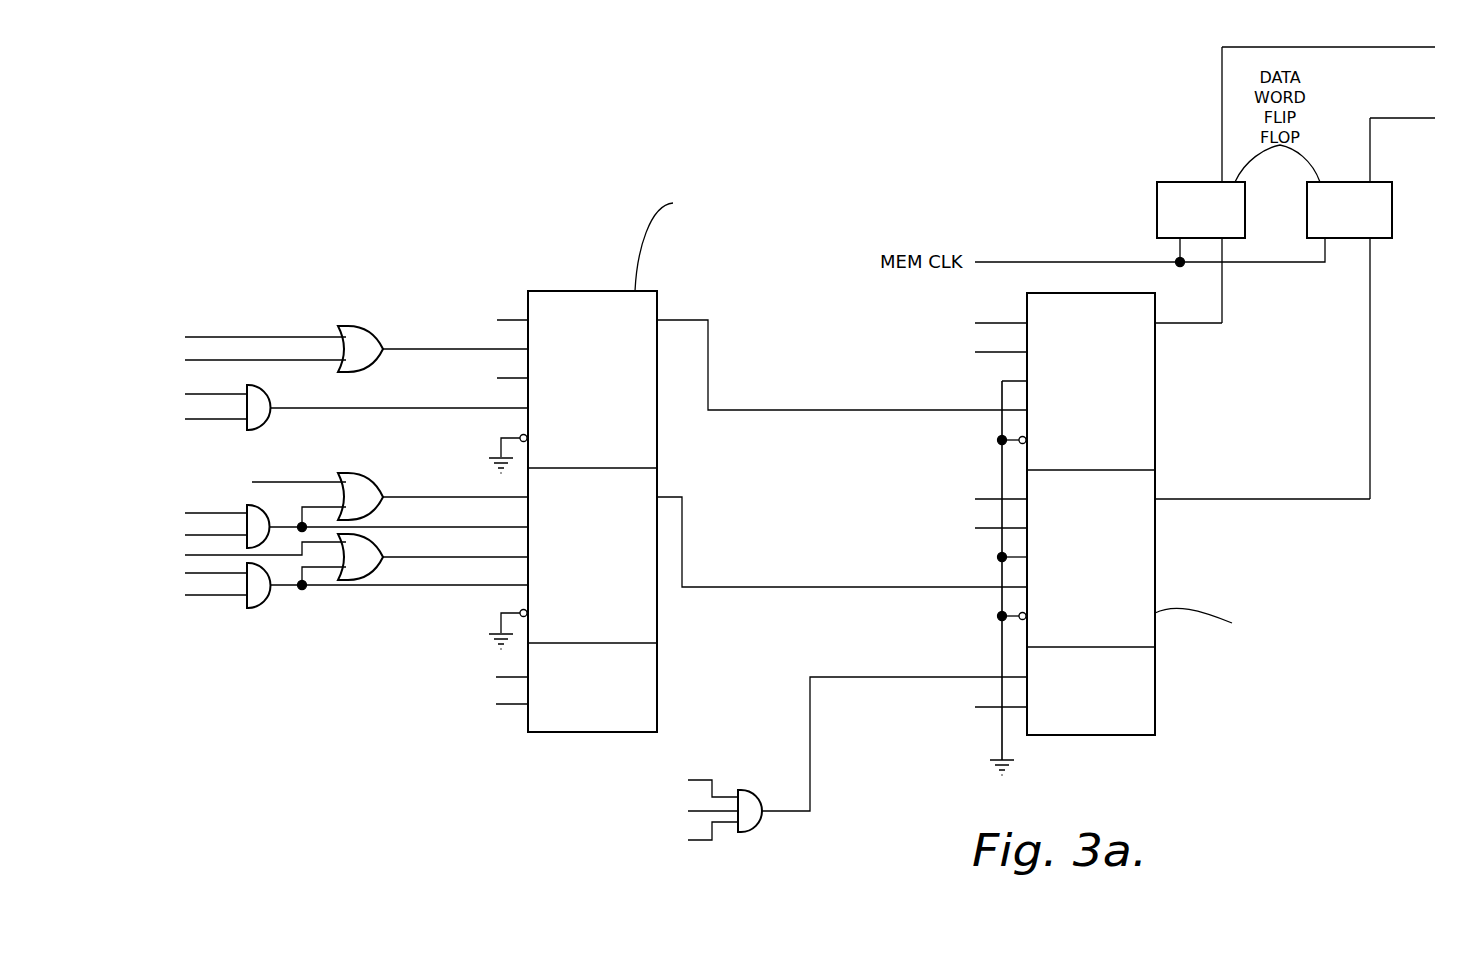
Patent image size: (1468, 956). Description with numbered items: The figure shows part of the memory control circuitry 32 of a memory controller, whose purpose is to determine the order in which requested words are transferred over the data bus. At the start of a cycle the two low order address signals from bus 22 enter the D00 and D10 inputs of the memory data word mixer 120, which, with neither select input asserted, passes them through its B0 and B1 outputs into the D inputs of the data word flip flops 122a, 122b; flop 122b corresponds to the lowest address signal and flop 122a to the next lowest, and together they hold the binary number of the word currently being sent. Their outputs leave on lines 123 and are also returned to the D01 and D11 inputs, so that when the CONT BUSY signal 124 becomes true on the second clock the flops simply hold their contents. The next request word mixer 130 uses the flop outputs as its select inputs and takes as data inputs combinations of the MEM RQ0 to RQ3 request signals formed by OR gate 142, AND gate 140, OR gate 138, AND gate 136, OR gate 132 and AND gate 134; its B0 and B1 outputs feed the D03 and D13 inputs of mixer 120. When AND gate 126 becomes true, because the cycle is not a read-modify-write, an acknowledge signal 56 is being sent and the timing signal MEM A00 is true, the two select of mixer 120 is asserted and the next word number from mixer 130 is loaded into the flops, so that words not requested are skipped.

The memory control circuitry 32 is at (755, 118).
The address bus 22 is at (1012, 321).
The acknowledge signal 56 is at (702, 779).
The memory data word mixer 120 is at (1155, 562).
The data word flip flop 122a is at (1157, 188).
The data word flip flop 122b is at (1307, 222).
The lines 123 is at (508, 706).
The CONT BUSY signal 124 is at (985, 708).
The AND gate 126 is at (740, 790).
The next request word mixer 130 is at (590, 291).
The OR gate 132 is at (385, 545).
The AND gate 134 is at (268, 594).
The AND gate 136 is at (257, 507).
The OR gate 138 is at (370, 475).
The AND gate 140 is at (264, 389).
The OR gate 142 is at (341, 328).